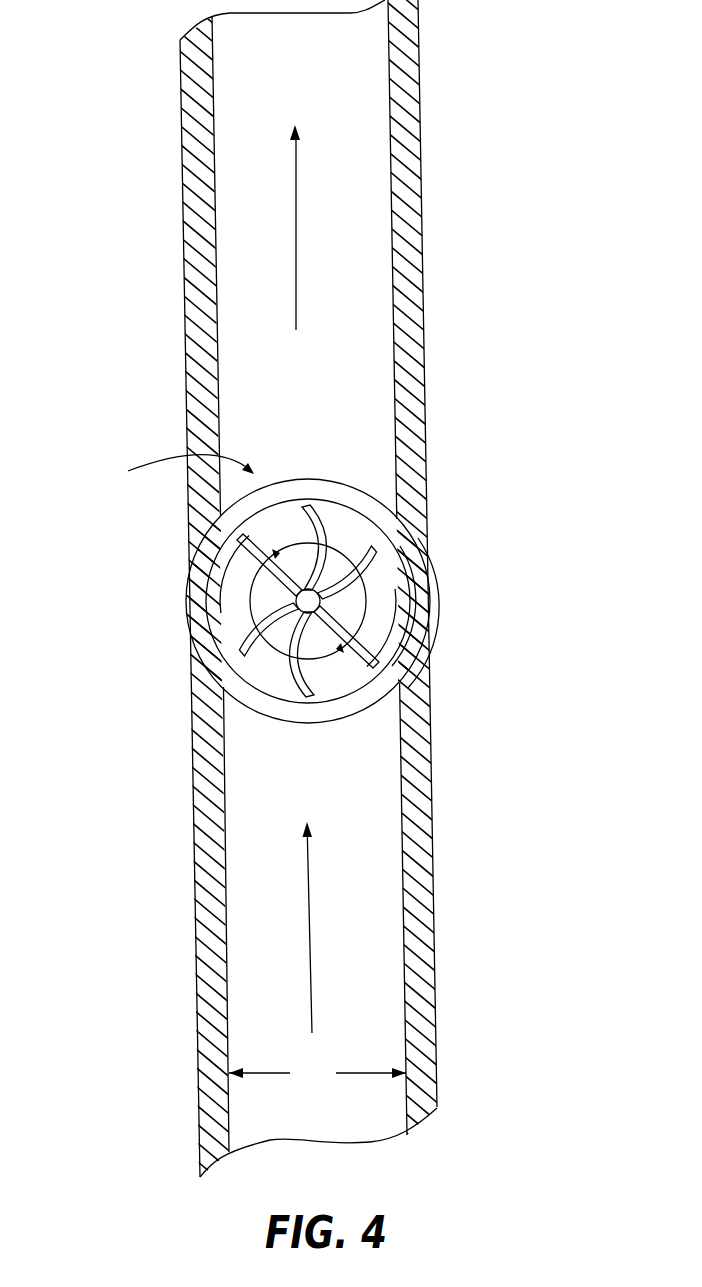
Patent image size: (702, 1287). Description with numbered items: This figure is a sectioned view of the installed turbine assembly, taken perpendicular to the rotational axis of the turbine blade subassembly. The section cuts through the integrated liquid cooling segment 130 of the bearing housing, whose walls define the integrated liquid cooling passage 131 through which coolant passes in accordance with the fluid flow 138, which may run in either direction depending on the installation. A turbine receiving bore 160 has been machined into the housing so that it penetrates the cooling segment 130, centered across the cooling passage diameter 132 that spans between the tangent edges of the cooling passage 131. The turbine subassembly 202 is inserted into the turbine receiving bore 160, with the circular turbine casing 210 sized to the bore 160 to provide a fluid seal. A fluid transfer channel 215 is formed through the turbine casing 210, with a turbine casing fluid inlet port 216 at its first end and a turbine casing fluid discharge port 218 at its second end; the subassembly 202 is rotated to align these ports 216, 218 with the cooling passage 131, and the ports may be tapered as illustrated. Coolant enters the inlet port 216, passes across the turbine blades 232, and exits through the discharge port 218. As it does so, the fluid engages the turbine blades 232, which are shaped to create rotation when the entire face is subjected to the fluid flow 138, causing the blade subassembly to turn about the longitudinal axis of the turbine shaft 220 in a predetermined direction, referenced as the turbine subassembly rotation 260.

The integrated liquid cooling segment 130 is at (418, 85).
The integrated liquid cooling passage 131 is at (213, 95).
The cooling passage diameter 132 is at (317, 1073).
The fluid flow 138 is at (296, 197).
The turbine receiving bore 160 is at (193, 637).
The turbine subassembly 202 is at (169, 470).
The turbine casing 210 is at (430, 592).
The fluid transfer channel 215 is at (420, 700).
The turbine casing fluid inlet port 216 is at (236, 684).
The turbine casing fluid discharge port 218 is at (380, 513).
The turbine shaft 220 is at (423, 660).
The turbine blades 232 is at (425, 560).
The turbine subassembly rotation 260 is at (385, 624).